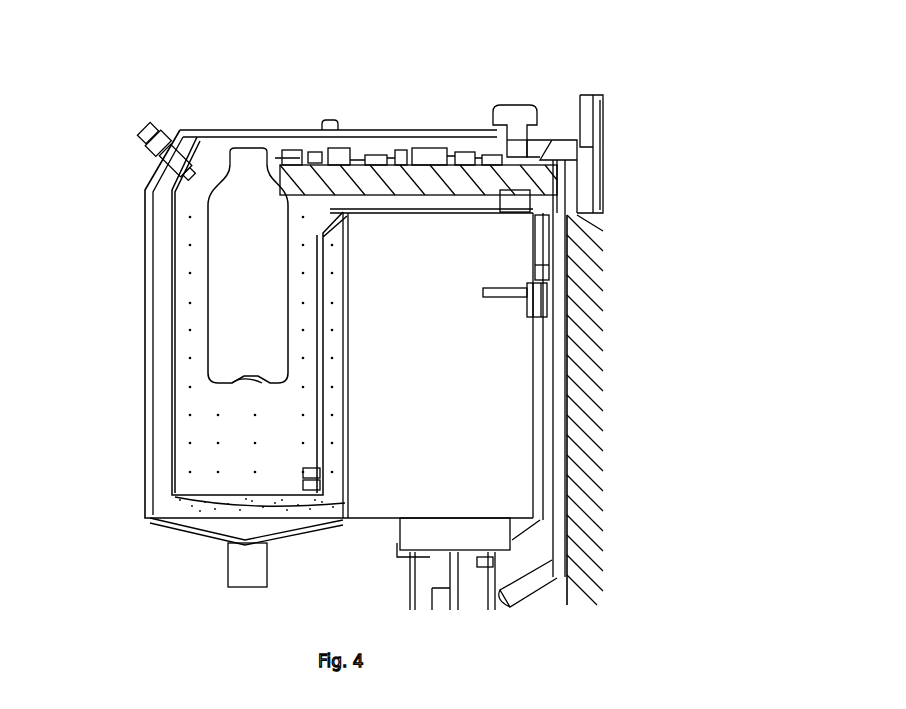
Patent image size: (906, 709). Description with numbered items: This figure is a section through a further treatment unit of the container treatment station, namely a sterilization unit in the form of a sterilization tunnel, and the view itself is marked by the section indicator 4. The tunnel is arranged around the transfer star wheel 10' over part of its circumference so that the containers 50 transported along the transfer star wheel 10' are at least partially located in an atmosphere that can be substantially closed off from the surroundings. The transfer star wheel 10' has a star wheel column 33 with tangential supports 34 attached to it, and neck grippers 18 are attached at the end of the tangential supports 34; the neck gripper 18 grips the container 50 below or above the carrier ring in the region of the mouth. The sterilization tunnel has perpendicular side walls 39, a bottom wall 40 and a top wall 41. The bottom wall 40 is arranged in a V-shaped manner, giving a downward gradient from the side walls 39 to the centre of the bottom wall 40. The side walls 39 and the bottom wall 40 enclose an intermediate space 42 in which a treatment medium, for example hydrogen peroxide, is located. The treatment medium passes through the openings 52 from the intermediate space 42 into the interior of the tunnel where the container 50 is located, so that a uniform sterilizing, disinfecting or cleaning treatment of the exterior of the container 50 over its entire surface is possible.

The section view indicator 4 is at (112, 349).
The transfer star wheel 10' is at (545, 375).
The neck gripper 18 is at (282, 132).
The star wheel column 33 is at (590, 380).
The tangential support 34 is at (465, 160).
The side wall 39 is at (147, 437).
The bottom wall 40 is at (180, 530).
The top wall 41 is at (367, 131).
The intermediate space 42 is at (153, 273).
The container 50 is at (264, 319).
The opening 52 is at (303, 302).